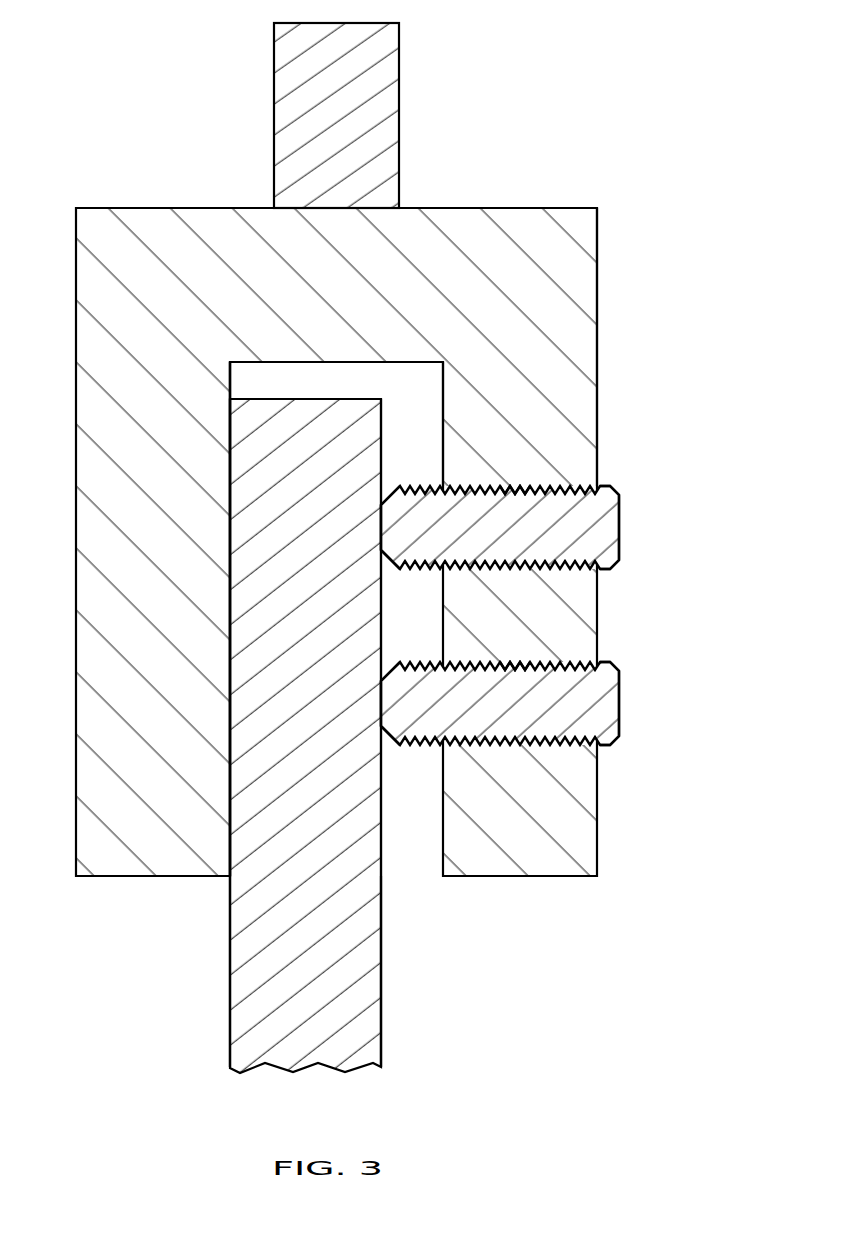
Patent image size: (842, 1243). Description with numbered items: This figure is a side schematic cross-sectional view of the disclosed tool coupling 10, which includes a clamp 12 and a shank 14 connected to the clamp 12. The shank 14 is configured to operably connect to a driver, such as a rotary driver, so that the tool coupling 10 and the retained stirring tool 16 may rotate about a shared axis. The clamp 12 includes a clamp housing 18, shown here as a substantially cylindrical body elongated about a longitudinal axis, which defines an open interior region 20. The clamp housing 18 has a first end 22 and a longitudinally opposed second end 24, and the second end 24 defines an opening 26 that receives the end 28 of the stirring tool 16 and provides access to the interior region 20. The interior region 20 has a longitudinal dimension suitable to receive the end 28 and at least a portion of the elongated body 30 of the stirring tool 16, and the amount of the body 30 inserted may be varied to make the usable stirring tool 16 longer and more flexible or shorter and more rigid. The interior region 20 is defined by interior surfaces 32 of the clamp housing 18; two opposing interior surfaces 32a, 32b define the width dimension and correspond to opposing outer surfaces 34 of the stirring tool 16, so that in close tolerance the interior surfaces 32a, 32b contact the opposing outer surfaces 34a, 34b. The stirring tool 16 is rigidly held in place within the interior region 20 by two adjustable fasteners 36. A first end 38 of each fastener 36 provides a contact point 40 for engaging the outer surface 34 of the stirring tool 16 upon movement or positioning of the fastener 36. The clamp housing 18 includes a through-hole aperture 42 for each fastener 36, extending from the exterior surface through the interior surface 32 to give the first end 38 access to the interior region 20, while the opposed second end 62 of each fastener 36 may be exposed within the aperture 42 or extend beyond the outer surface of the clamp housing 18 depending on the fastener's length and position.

The tool coupling 10 is at (627, 166).
The clamp 12 is at (597, 262).
The shank 14 is at (399, 124).
The stirring tool 16 is at (304, 736).
The clamp housing 18 is at (585, 351).
The open interior region 20 is at (293, 378).
The first end 22 is at (500, 185).
The second end 24 is at (129, 905).
The opening 26 is at (381, 878).
The end 28 is at (320, 529).
The elongated body 30 is at (245, 709).
The interior surface 32 is at (366, 370).
The interior surface 32a is at (230, 547).
The interior surface 32b is at (443, 433).
The outer surface 34 is at (230, 967).
The outer surface 34a is at (230, 748).
The outer surface 34b is at (381, 615).
The adjustable fastener 36 is at (567, 505).
The first end 38 is at (398, 570).
The contact point 40 is at (381, 522).
The through-hole aperture 42 is at (525, 485).
The second end 62 is at (619, 528).